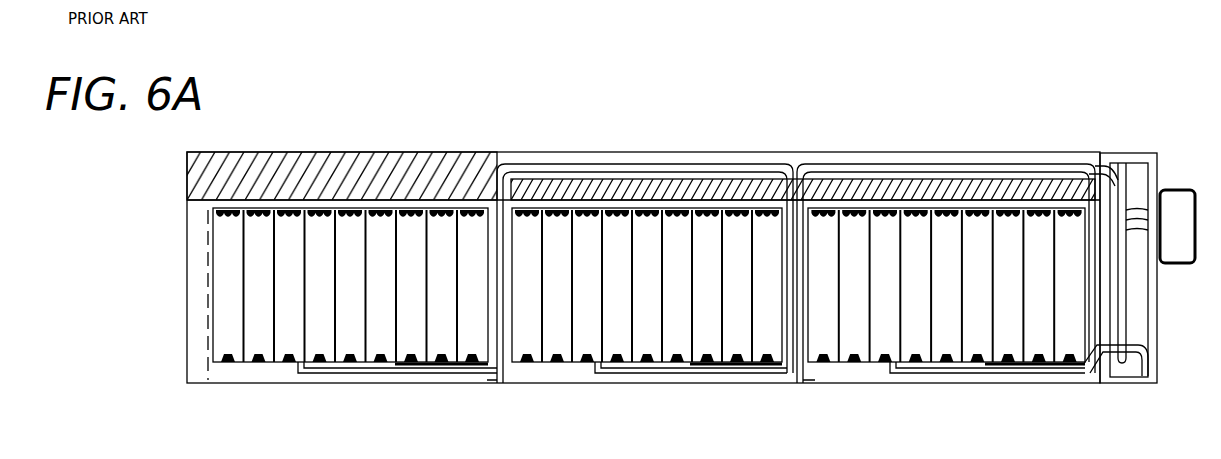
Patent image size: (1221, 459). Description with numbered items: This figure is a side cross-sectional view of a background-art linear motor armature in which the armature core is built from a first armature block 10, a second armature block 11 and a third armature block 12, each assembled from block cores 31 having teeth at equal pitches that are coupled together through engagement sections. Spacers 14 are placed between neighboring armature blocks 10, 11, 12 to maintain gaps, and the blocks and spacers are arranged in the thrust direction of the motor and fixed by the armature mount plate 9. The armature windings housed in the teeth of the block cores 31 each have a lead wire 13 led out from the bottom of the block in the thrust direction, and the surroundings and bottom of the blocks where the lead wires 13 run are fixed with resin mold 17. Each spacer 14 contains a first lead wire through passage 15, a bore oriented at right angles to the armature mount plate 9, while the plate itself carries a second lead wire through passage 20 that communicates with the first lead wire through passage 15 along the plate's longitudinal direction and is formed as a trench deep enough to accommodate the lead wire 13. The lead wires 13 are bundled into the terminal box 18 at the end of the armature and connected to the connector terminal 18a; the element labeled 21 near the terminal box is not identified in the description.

The armature mount plate 9 is at (276, 168).
The first armature block 10 is at (355, 210).
The second armature block 11 is at (679, 212).
The third armature block 12 is at (942, 212).
The lead wire 13 is at (432, 375).
The spacer 14 is at (487, 386).
The first lead wire through passage 15 is at (505, 380).
The resin mold 17 is at (222, 380).
The terminal box 18 is at (1157, 320).
The connector terminal 18a is at (1176, 190).
The second lead wire through passage 20 is at (738, 162).
The connecting pipe 21 is at (1150, 358).
The block core 31 is at (250, 345).